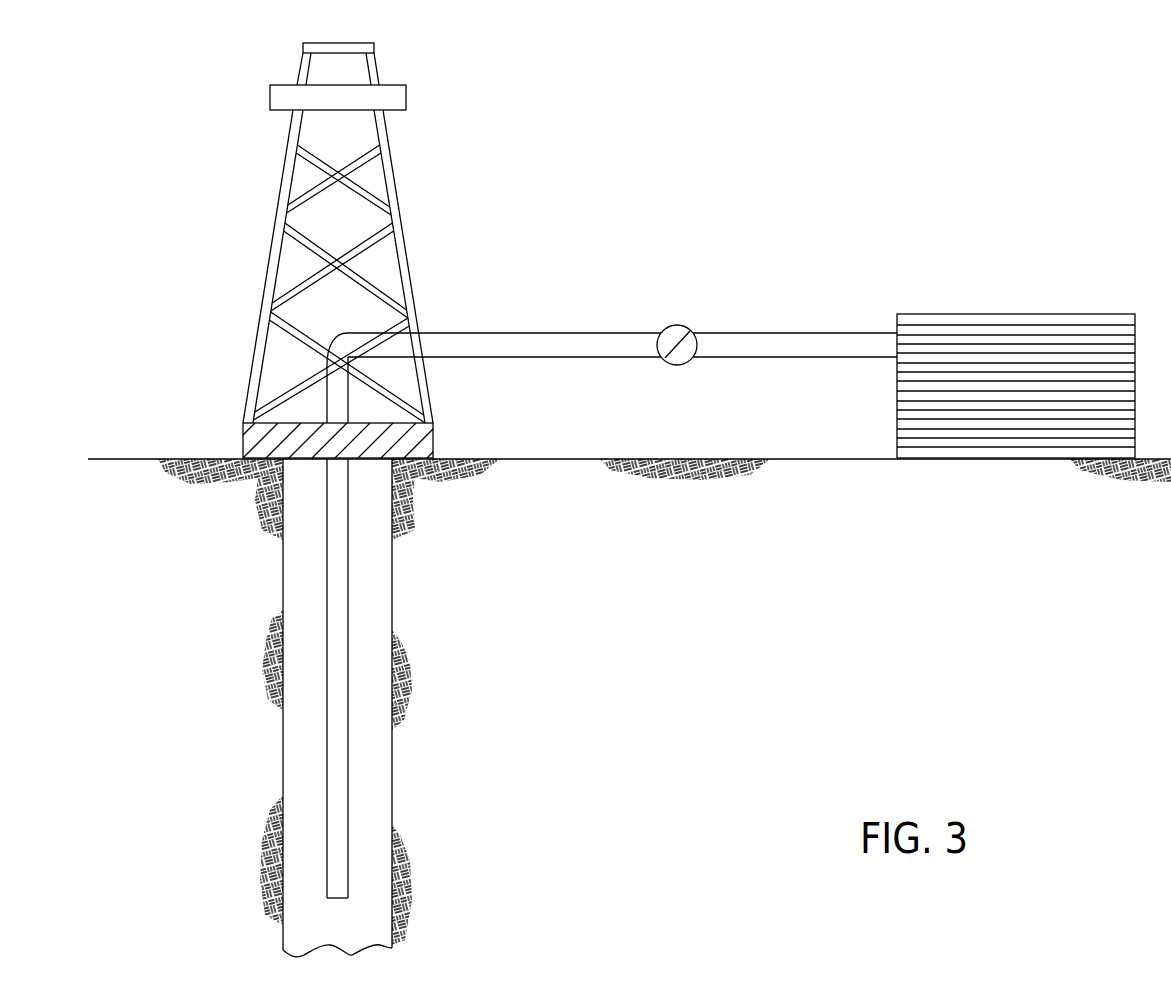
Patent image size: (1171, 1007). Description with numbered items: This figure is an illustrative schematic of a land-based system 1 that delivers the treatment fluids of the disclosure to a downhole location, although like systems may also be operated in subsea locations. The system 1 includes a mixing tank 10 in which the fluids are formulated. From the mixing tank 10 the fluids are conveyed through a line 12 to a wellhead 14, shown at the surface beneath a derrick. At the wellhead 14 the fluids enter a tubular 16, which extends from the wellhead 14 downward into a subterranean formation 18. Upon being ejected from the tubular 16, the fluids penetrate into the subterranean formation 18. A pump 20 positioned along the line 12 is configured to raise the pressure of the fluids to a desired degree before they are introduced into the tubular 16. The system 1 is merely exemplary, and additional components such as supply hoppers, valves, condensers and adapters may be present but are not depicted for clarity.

The system 1 is at (163, 204).
The mixing tank 10 is at (1025, 313).
The line 12 is at (501, 332).
The wellhead 14 is at (243, 428).
The tubular 16 is at (349, 579).
The subterranean formation 18 is at (145, 705).
The pump 20 is at (675, 325).